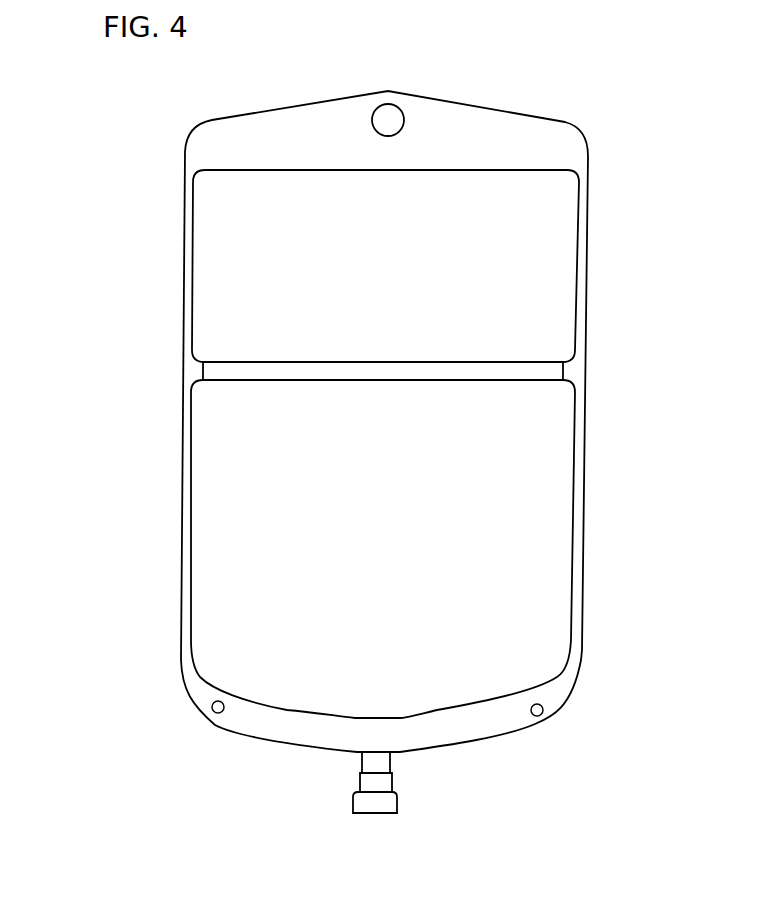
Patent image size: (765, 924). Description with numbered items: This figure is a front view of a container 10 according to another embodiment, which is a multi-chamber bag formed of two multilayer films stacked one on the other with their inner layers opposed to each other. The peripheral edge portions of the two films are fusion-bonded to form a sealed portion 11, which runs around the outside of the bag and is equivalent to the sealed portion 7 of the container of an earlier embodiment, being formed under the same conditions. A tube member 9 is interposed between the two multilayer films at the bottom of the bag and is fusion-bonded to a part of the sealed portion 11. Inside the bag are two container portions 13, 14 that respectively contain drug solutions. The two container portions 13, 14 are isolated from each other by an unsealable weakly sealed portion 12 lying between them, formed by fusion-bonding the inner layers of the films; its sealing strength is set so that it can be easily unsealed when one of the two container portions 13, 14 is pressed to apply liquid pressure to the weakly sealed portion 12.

The container 10 is at (568, 108).
The sealed portion 7 is at (462, 732).
The sealed portion 11 is at (178, 545).
The container portion 13 is at (403, 229).
The container portion 14 is at (402, 433).
The weakly sealed portion 12 is at (247, 371).
The tube member 9 is at (355, 780).